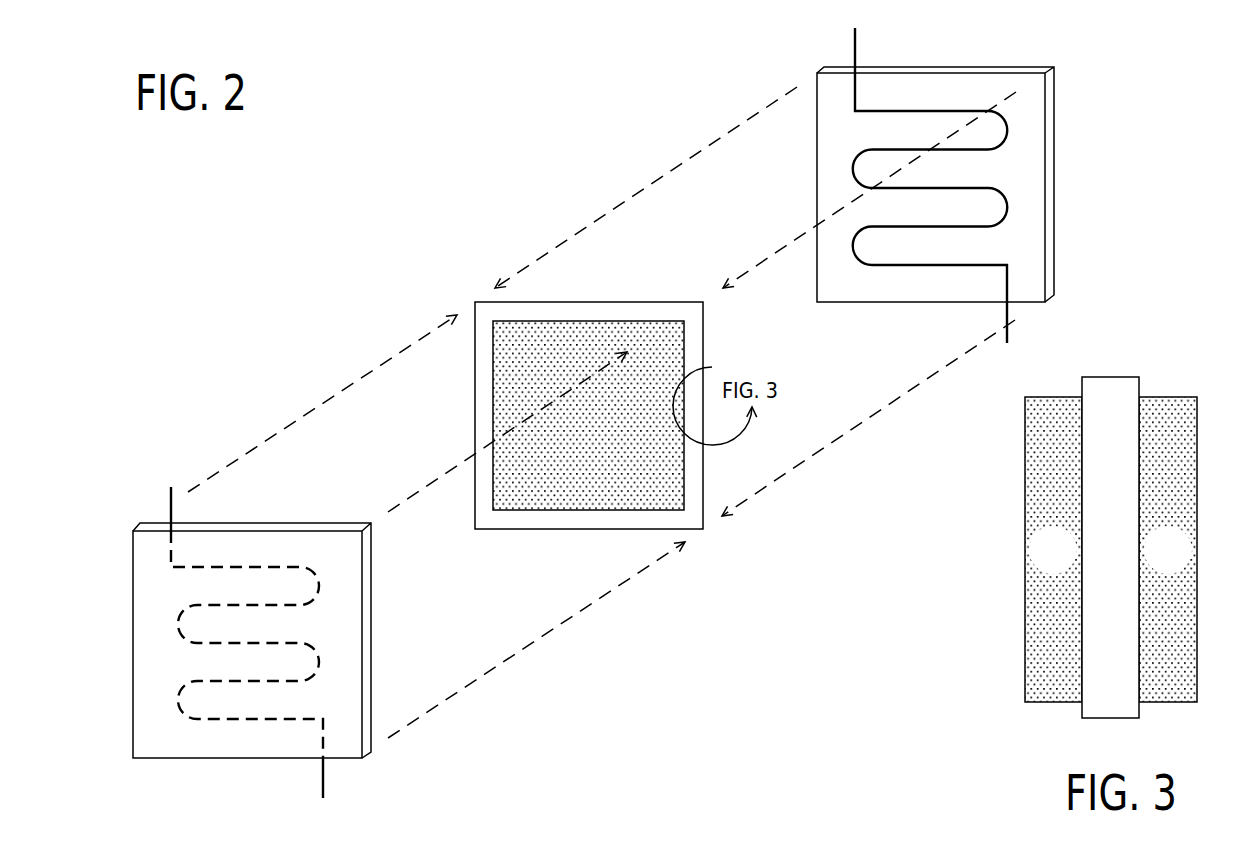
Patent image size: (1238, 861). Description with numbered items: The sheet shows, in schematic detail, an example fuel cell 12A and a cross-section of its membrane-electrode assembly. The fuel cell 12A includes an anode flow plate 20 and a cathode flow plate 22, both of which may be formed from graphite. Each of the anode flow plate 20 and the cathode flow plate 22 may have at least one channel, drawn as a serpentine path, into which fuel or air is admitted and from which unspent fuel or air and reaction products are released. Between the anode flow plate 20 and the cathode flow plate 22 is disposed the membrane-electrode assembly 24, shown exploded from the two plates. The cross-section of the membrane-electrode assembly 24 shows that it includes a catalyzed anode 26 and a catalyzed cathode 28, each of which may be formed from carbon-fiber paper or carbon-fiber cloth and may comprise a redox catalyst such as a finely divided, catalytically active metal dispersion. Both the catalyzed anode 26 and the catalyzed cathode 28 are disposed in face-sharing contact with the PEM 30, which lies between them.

In FIG. 2, the fuel cell 12A is at (438, 225).
In FIG. 2, the anode flow plate 20 is at (133, 643).
In FIG. 2, the cathode flow plate 22 is at (1054, 187).
In FIG. 2, the membrane-electrode assembly 24 is at (590, 548).
In FIG. 3, the membrane-electrode assembly 24 is at (988, 547).
In FIG. 3, the catalyzed anode 26 is at (1041, 560).
In FIG. 3, the catalyzed cathode 28 is at (1156, 560).
In FIG. 3, the PEM 30 is at (1098, 560).